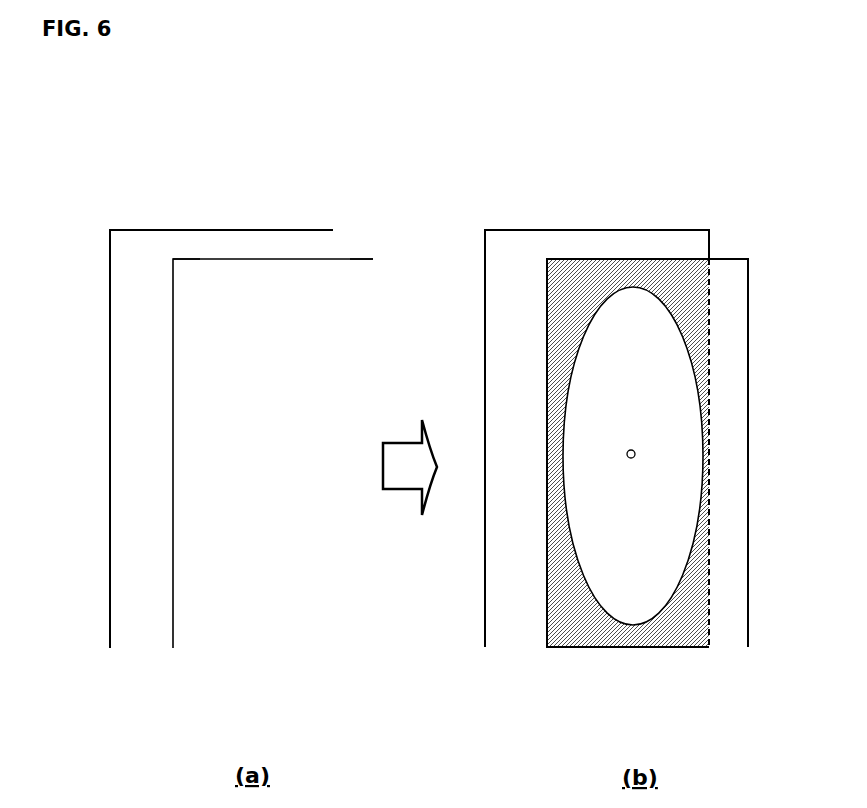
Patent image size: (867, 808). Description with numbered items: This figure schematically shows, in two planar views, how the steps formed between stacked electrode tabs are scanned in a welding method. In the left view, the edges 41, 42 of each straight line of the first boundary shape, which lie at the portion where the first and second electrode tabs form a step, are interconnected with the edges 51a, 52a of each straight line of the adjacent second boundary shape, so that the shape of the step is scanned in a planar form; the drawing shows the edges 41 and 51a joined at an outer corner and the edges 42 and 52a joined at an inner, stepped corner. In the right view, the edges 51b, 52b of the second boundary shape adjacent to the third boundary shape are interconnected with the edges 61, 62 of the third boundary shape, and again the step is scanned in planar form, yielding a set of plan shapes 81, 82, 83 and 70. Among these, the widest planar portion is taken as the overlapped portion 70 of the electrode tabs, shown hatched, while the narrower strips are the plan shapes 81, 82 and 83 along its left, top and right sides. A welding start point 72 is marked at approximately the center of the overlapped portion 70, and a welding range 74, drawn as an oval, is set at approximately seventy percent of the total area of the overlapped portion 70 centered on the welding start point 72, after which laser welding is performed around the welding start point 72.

The edge 41 is at (108, 238).
The edge 42 is at (172, 264).
The edge 51a is at (113, 230).
The edge 51b is at (323, 229).
The edge 52a is at (178, 230).
The edge 52b is at (367, 257).
The edge 61 is at (709, 237).
The edge 62 is at (748, 278).
The overlapped portion 70 is at (566, 294).
The welding start point 72 is at (630, 462).
The welding range 74 is at (629, 286).
The plan shape 81 is at (514, 513).
The plan shape 82 is at (660, 249).
The plan shape 83 is at (727, 565).